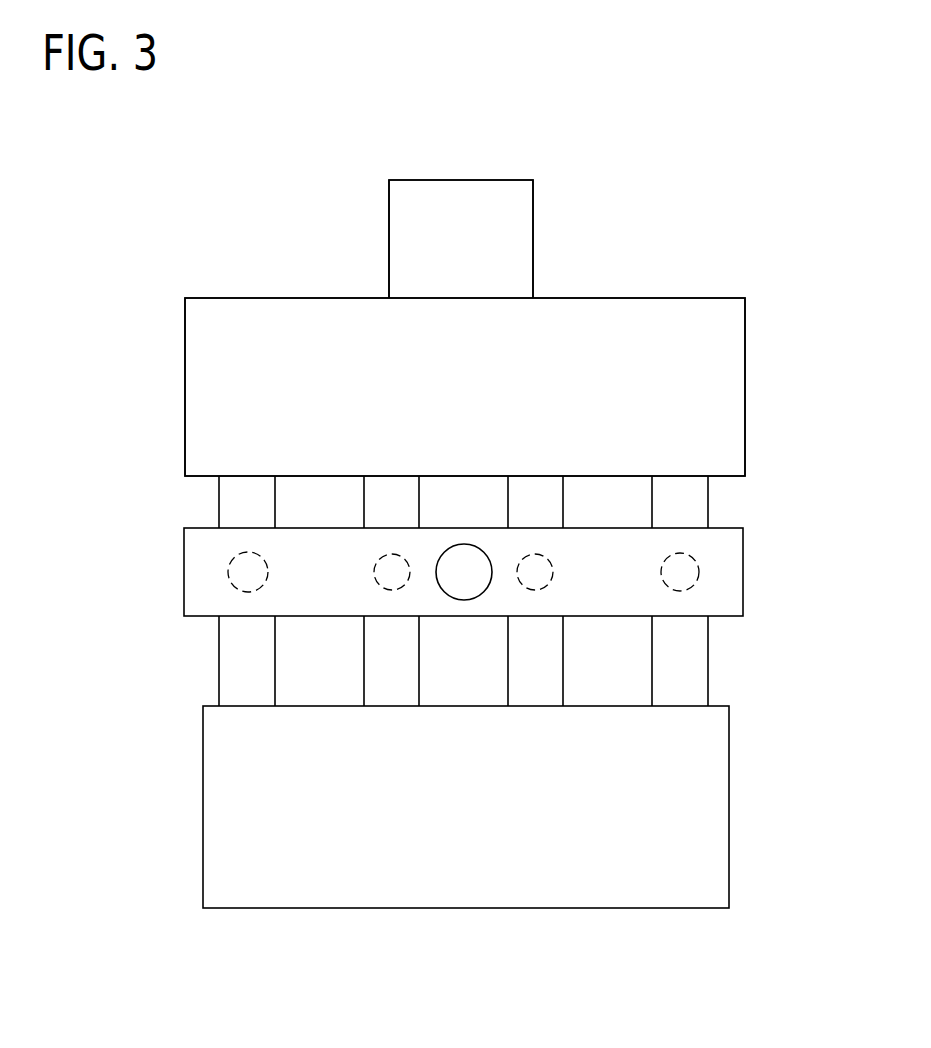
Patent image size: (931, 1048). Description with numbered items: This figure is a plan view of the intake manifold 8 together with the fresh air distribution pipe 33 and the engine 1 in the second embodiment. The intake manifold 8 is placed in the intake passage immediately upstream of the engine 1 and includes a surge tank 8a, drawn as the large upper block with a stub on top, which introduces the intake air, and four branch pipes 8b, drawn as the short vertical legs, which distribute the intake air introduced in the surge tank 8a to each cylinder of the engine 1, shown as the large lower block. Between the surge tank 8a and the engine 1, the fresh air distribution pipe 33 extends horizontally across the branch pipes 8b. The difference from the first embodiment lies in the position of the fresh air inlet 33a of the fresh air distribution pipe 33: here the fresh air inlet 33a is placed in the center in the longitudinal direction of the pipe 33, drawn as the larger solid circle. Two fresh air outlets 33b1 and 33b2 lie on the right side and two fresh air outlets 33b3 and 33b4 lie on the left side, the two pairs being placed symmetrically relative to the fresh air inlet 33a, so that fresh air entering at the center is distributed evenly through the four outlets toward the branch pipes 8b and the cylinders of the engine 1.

The engine 1 is at (729, 806).
The intake manifold 8 is at (745, 380).
The surge tank 8a is at (730, 330).
The branch pipes 8b is at (232, 668).
The fresh air distribution pipe 33 is at (743, 538).
The fresh air inlet 33a is at (468, 600).
The fresh air outlet 33b1 is at (553, 573).
The fresh air outlet 33b2 is at (699, 574).
The fresh air outlet 33b3 is at (376, 571).
The fresh air outlet 33b4 is at (230, 571).